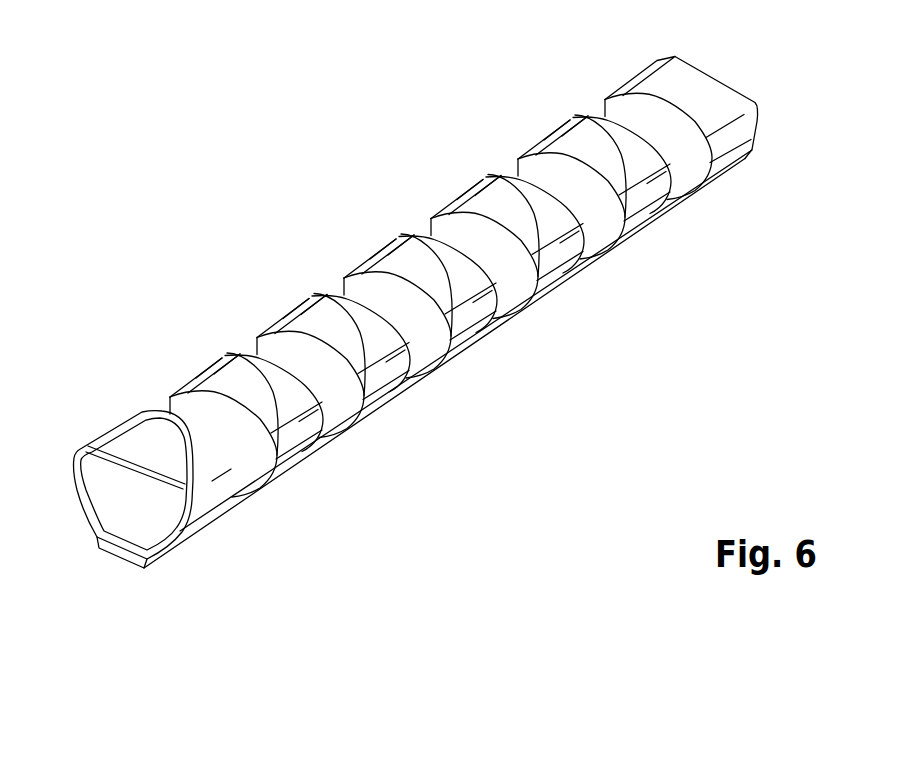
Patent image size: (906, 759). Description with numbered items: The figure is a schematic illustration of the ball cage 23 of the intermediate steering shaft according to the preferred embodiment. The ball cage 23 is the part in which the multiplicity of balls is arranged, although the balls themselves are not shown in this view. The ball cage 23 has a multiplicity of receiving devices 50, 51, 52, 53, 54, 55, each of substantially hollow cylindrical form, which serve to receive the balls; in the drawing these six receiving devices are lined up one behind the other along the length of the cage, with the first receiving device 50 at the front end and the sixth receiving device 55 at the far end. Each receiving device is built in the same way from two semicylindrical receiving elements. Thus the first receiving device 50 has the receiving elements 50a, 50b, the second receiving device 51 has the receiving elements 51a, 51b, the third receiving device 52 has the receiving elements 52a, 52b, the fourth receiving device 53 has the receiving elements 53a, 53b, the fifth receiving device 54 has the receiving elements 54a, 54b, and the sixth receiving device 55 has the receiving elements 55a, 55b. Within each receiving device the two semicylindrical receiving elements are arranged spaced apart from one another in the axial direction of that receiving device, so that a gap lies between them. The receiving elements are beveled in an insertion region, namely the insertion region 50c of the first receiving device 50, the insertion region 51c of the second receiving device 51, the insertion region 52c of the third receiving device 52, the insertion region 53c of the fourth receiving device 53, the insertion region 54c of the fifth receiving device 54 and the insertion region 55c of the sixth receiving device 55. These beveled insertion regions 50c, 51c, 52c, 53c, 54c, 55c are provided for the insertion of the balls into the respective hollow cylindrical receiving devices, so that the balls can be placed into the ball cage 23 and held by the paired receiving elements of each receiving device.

The ball cage 23 is at (507, 370).
The receiving device 50 is at (184, 436).
The semicylindrical receiving element 50a is at (112, 424).
The semicylindrical receiving element 50b is at (182, 401).
The insertion region 50c is at (133, 375).
The receiving device 51 is at (290, 364).
The semicylindrical receiving element 51a is at (190, 341).
The semicylindrical receiving element 51b is at (269, 342).
The insertion region 51c is at (247, 364).
The receiving device 52 is at (377, 304).
The semicylindrical receiving element 52a is at (277, 282).
The semicylindrical receiving element 52b is at (356, 282).
The insertion region 52c is at (334, 304).
The receiving device 53 is at (464, 245).
The semicylindrical receiving element 53a is at (364, 222).
The semicylindrical receiving element 53b is at (443, 223).
The insertion region 53c is at (421, 245).
The receiving device 54 is at (551, 185).
The semicylindrical receiving element 54a is at (451, 163).
The semicylindrical receiving element 54b is at (530, 163).
The insertion region 54c is at (508, 185).
The receiving device 55 is at (639, 126).
The semicylindrical receiving element 55a is at (538, 103).
The semicylindrical receiving element 55b is at (617, 104).
The insertion region 55c is at (595, 126).